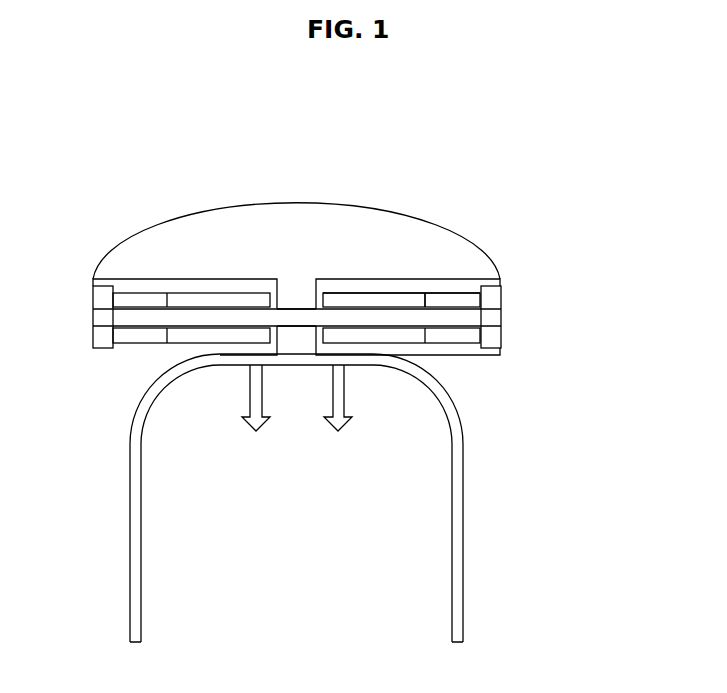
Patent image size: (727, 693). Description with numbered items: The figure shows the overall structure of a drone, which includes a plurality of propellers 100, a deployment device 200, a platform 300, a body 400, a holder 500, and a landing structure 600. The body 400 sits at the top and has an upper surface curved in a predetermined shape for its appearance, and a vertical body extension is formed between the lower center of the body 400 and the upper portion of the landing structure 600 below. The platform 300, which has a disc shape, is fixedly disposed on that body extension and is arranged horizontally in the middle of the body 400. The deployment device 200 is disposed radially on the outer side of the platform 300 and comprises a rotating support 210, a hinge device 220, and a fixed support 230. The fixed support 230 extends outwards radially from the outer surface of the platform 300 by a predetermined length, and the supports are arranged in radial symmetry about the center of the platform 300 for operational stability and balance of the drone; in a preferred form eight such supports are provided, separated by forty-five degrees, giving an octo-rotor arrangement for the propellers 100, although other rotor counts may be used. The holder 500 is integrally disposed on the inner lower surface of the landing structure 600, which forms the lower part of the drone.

The propellers 100 is at (370, 300).
The deployment device 200 is at (389, 271).
The rotating support 210 is at (447, 298).
The hinge device 220 is at (492, 297).
The fixed support 230 is at (360, 319).
The platform 300 is at (297, 310).
The body 400 is at (135, 245).
The holder 500 is at (248, 393).
The landing structure 600 is at (137, 515).